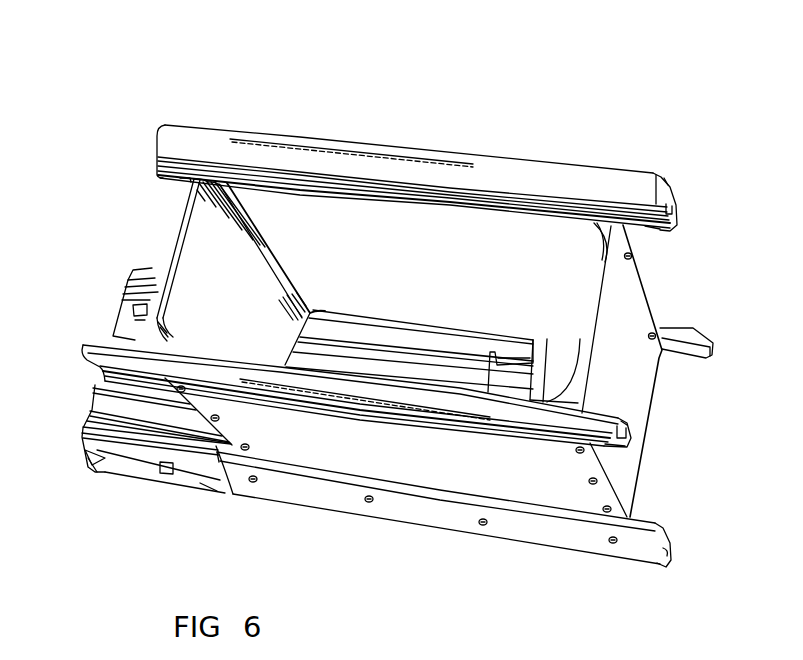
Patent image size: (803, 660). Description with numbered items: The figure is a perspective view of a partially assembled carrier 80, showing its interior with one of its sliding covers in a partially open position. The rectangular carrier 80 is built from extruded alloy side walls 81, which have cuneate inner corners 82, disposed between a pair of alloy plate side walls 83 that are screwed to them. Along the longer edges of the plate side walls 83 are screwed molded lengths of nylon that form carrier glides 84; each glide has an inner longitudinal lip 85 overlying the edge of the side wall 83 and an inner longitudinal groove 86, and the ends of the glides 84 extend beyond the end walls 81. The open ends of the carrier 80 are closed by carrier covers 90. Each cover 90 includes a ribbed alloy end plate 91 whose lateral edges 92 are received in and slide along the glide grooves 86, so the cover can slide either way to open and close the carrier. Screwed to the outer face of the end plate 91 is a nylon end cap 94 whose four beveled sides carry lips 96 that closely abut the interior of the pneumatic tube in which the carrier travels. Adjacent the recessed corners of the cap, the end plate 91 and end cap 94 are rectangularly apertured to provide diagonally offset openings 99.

The carrier 80 is at (345, 96).
The extruded alloy side wall 81 is at (180, 215).
The cuneate inner corner 82 is at (604, 234).
The alloy plate side wall 83 is at (296, 258).
The carrier glide 84 is at (503, 162).
The inner longitudinal lip 85 is at (650, 230).
The inner longitudinal groove 86 is at (670, 208).
The carrier cover 90 is at (95, 425).
The ribbed alloy end plate 91 is at (388, 335).
The lateral edge 92 is at (90, 458).
The end cap 94 is at (160, 478).
The lip 96 is at (549, 346).
The diagonally offset opening 99 is at (125, 318).